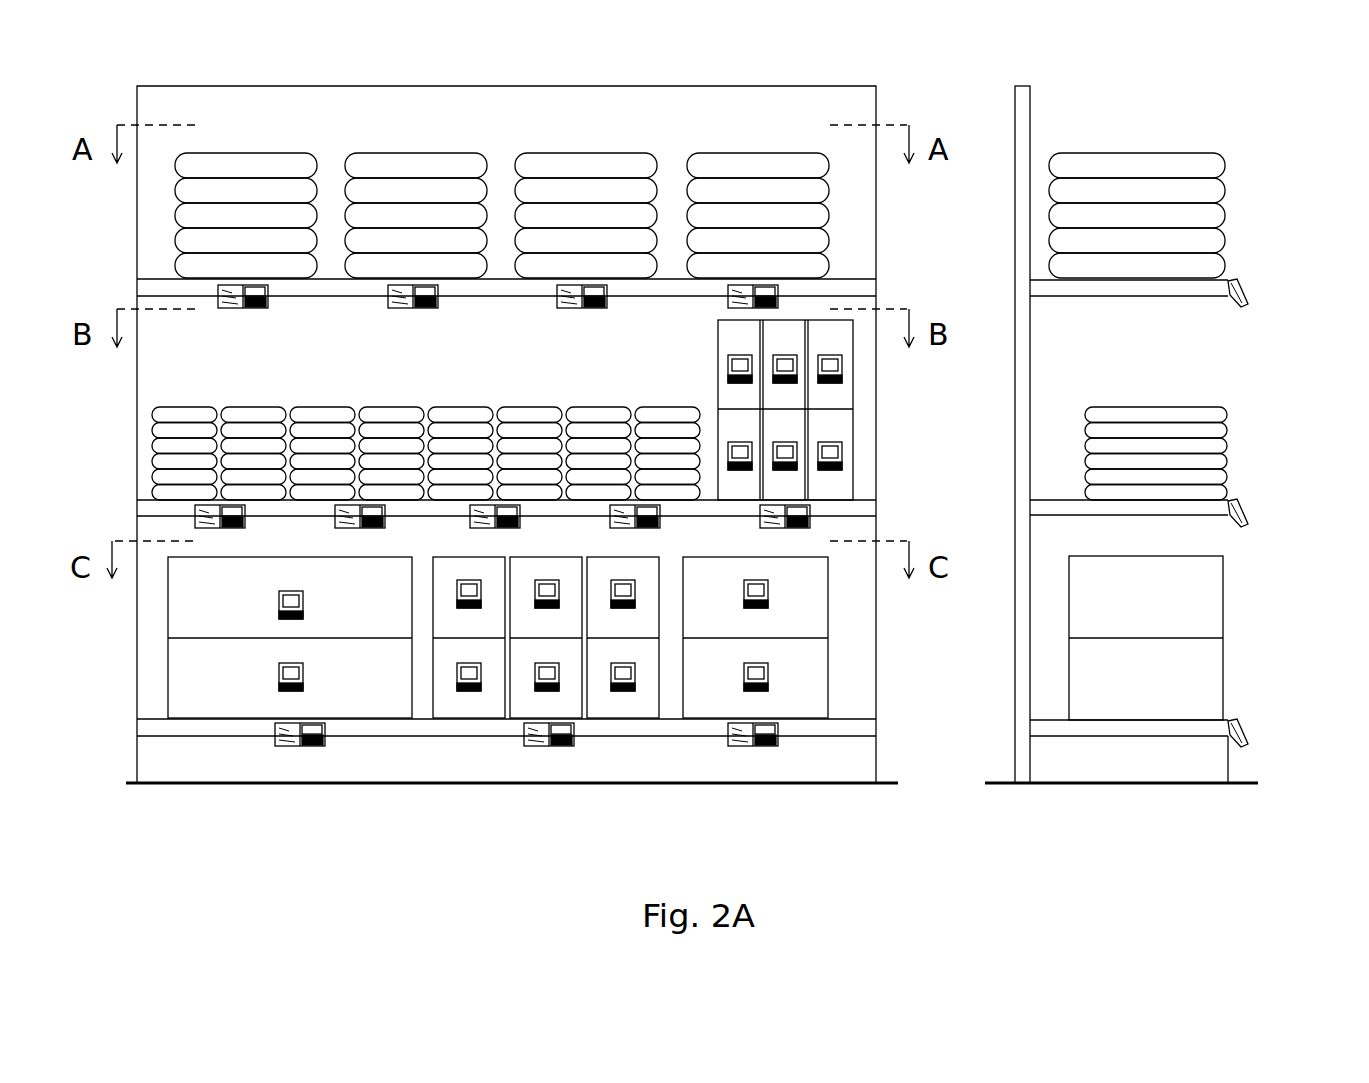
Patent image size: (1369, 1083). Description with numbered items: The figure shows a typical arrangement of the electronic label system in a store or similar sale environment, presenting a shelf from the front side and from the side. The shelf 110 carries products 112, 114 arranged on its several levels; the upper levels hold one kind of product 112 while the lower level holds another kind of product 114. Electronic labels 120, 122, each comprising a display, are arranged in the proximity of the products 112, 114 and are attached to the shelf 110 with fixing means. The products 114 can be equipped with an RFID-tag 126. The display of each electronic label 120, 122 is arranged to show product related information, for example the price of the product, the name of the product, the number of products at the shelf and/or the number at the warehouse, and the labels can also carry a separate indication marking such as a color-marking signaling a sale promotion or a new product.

The shelf 110 is at (777, 104).
The product 112 is at (250, 167).
The product 114 is at (202, 681).
The electronic label 120 is at (237, 300).
The electronic label 122 is at (290, 737).
The RFID-tag 126 is at (281, 688).